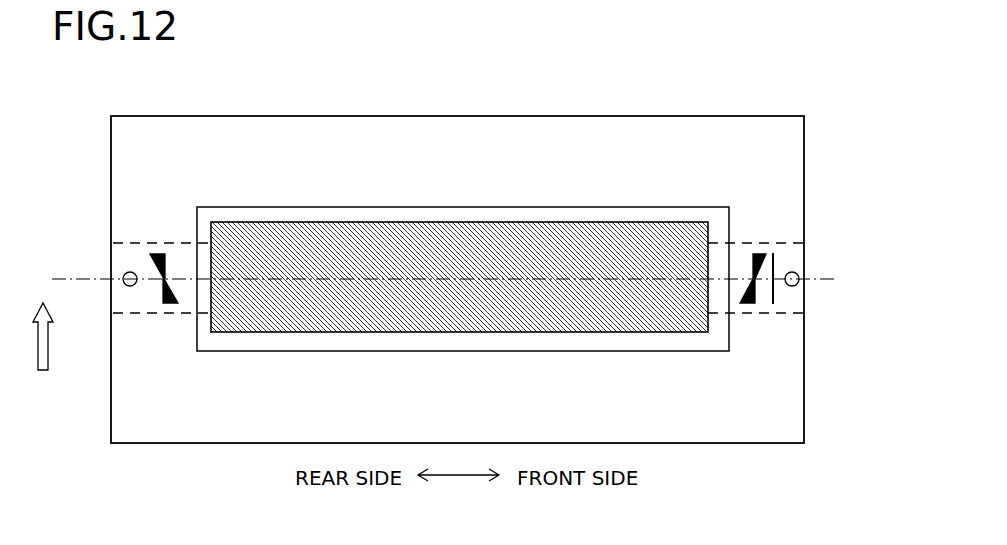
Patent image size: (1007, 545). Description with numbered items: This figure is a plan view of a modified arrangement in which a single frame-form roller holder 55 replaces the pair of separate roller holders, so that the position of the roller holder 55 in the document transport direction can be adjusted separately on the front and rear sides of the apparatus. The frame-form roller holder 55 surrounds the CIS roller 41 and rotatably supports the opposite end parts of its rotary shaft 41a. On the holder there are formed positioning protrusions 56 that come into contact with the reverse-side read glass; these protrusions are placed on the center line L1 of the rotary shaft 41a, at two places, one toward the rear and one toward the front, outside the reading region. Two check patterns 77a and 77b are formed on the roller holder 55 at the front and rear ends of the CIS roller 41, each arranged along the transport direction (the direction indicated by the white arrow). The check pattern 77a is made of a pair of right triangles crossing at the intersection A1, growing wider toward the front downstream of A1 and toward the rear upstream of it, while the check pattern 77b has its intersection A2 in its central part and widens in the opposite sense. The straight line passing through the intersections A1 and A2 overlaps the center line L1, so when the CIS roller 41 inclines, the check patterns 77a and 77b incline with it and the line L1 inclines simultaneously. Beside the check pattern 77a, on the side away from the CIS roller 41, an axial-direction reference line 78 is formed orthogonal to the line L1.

The frame-form roller holder 55 is at (805, 148).
The CIS roller 41 is at (546, 223).
The rotary shaft 41a is at (788, 243).
The check pattern 77a is at (753, 252).
The check pattern 77b is at (162, 252).
The axial-direction reference line 78 is at (775, 266).
The positioning protrusion 56 is at (128, 286).
The center line L1 is at (85, 278).
The intersection A1 is at (755, 283).
The intersection A2 is at (160, 283).